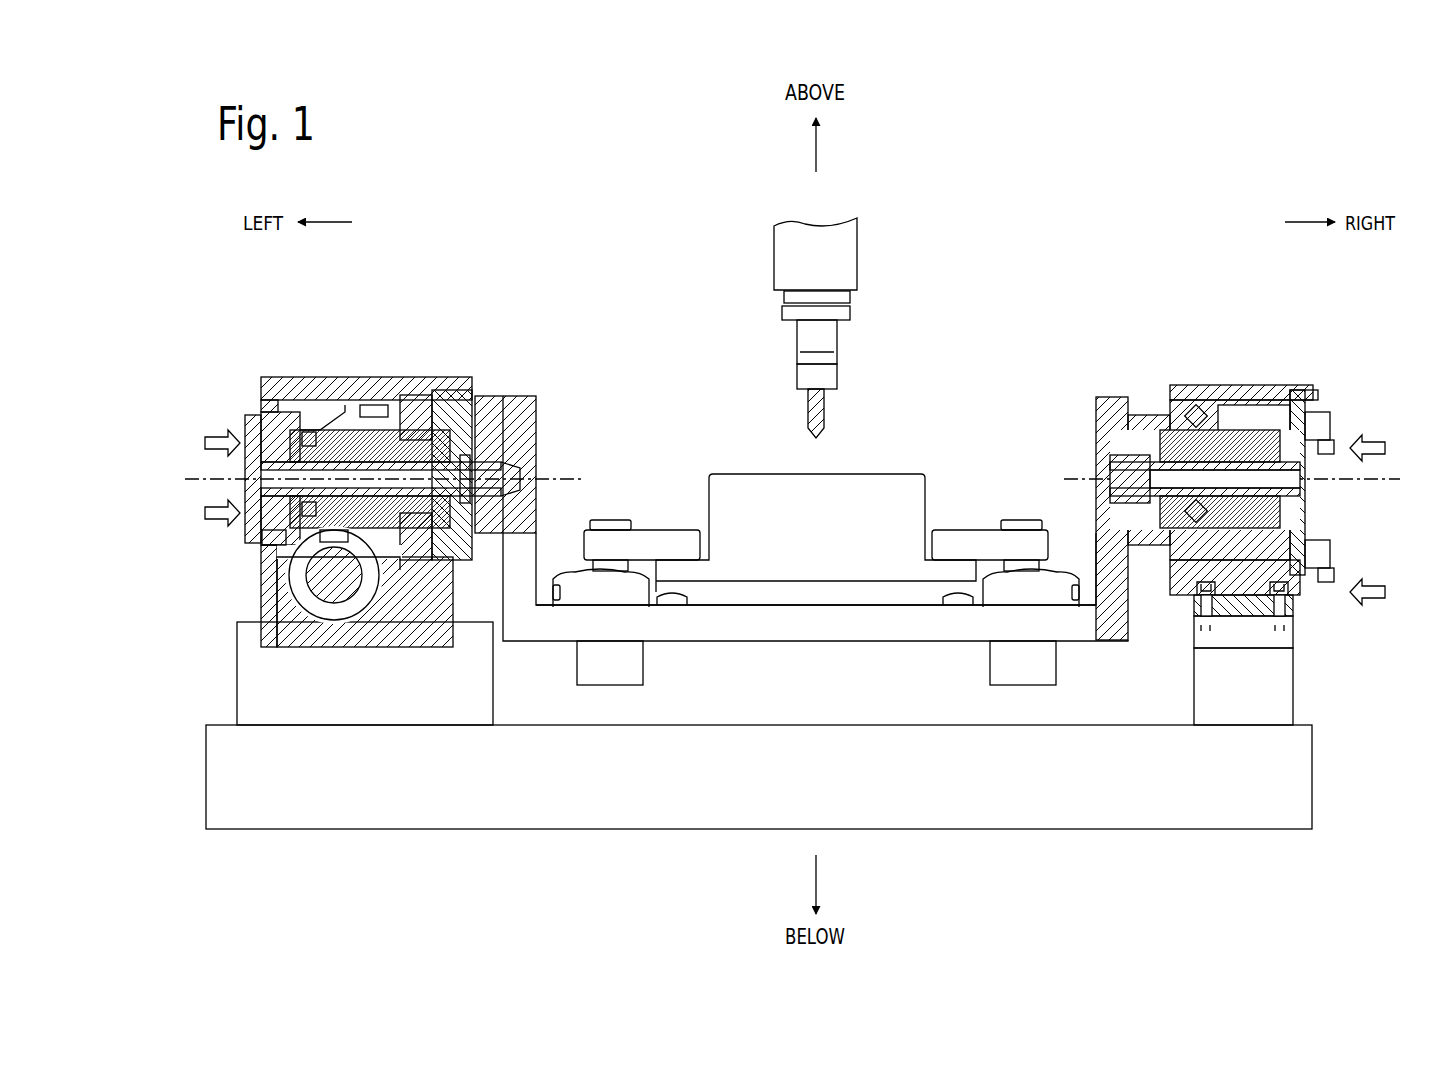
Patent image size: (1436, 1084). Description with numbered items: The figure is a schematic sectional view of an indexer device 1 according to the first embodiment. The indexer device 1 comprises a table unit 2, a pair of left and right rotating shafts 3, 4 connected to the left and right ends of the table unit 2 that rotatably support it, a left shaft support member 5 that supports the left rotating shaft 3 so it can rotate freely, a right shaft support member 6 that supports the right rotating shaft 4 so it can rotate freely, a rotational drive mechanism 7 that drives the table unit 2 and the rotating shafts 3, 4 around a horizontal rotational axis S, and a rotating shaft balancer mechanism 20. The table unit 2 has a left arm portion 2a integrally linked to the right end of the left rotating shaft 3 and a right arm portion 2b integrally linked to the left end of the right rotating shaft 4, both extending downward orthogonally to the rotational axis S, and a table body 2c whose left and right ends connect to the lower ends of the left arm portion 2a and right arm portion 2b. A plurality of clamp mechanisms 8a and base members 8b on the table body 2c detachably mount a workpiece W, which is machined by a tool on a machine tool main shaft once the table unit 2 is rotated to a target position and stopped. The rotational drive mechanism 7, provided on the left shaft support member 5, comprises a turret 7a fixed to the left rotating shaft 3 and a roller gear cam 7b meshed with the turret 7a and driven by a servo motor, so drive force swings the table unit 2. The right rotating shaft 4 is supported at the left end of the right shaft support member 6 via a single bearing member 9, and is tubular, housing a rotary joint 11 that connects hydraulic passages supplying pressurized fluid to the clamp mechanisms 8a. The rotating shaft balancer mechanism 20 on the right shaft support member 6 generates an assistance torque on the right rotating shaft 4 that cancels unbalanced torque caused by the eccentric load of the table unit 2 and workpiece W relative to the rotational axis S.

The indexer device 1 is at (785, 496).
The table unit 2 is at (801, 556).
The left arm portion 2a is at (536, 425).
The right arm portion 2b is at (1096, 420).
The table body 2c is at (878, 627).
The left rotating shaft 3 is at (385, 440).
The right rotating shaft 4 is at (1245, 435).
The left shaft support member 5 is at (300, 376).
The right shaft support member 6 is at (1244, 473).
The rotational drive mechanism 7 is at (329, 586).
The turret 7a is at (325, 541).
The roller gear cam 7b is at (285, 580).
The clamp mechanism 8a is at (580, 668).
The base member 8b is at (672, 608).
The bearing member 9 is at (1195, 407).
The rotary joint 11 is at (1285, 470).
The rotating shaft balancer mechanism 20 is at (1275, 412).
The workpiece W is at (878, 484).
The rotational axis S is at (192, 482).